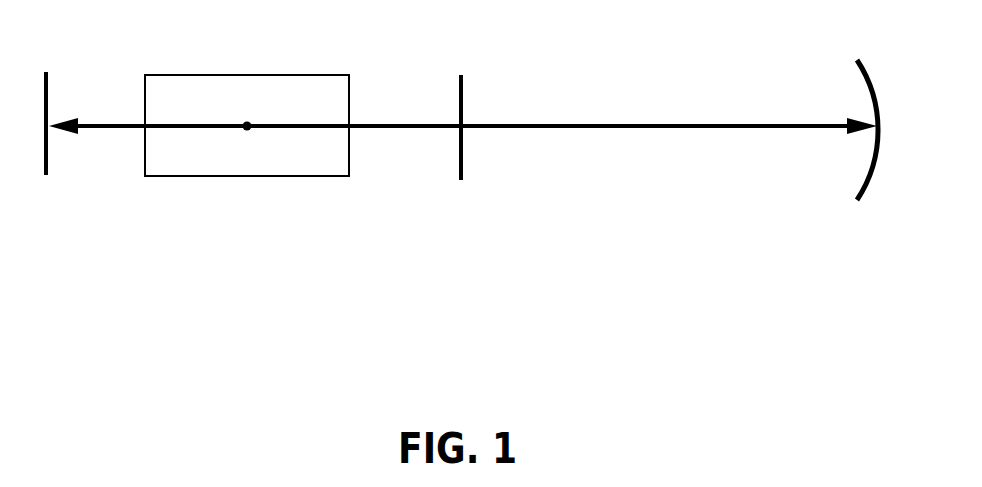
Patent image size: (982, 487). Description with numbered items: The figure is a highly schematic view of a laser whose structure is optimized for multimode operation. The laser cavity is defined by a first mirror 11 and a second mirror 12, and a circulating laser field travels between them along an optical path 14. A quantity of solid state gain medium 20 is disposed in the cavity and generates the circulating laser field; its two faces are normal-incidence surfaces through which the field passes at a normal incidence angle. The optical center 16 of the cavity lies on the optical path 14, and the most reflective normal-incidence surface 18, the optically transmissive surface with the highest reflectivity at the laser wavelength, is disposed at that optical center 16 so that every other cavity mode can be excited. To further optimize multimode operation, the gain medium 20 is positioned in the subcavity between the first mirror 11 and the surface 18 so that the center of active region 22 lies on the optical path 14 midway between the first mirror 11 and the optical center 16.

The first mirror 11 is at (46, 175).
The second mirror 12 is at (846, 212).
The optical path 14 is at (606, 118).
The optical center 16 is at (470, 116).
The most reflective normal-incidence surface 18 is at (461, 180).
The solid state gain medium 20 is at (245, 176).
The center of active region 22 is at (252, 116).